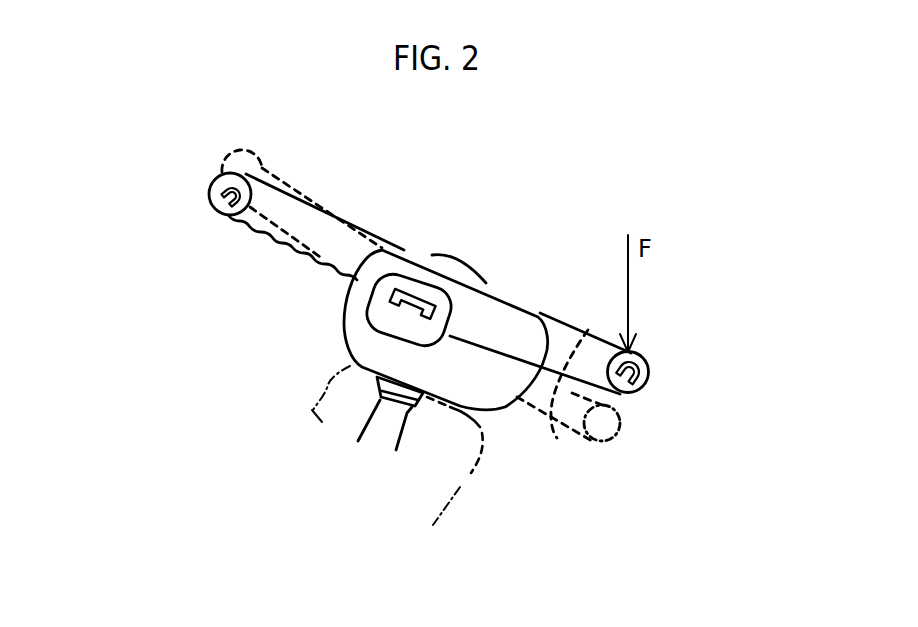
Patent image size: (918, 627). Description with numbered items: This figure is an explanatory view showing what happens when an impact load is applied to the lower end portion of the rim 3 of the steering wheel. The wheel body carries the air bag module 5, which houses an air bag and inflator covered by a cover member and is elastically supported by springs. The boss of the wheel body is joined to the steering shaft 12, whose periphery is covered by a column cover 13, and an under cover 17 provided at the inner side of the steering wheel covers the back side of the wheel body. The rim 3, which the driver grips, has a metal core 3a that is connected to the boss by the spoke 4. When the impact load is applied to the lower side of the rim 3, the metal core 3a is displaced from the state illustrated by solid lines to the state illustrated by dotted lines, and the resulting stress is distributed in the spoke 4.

The rim 3 is at (376, 281).
The metal core 3a is at (238, 201).
The spoke 4 is at (393, 295).
The air bag module 5 is at (483, 297).
The steering shaft 12 is at (387, 432).
The column cover 13 is at (457, 477).
The under cover 17 is at (482, 378).